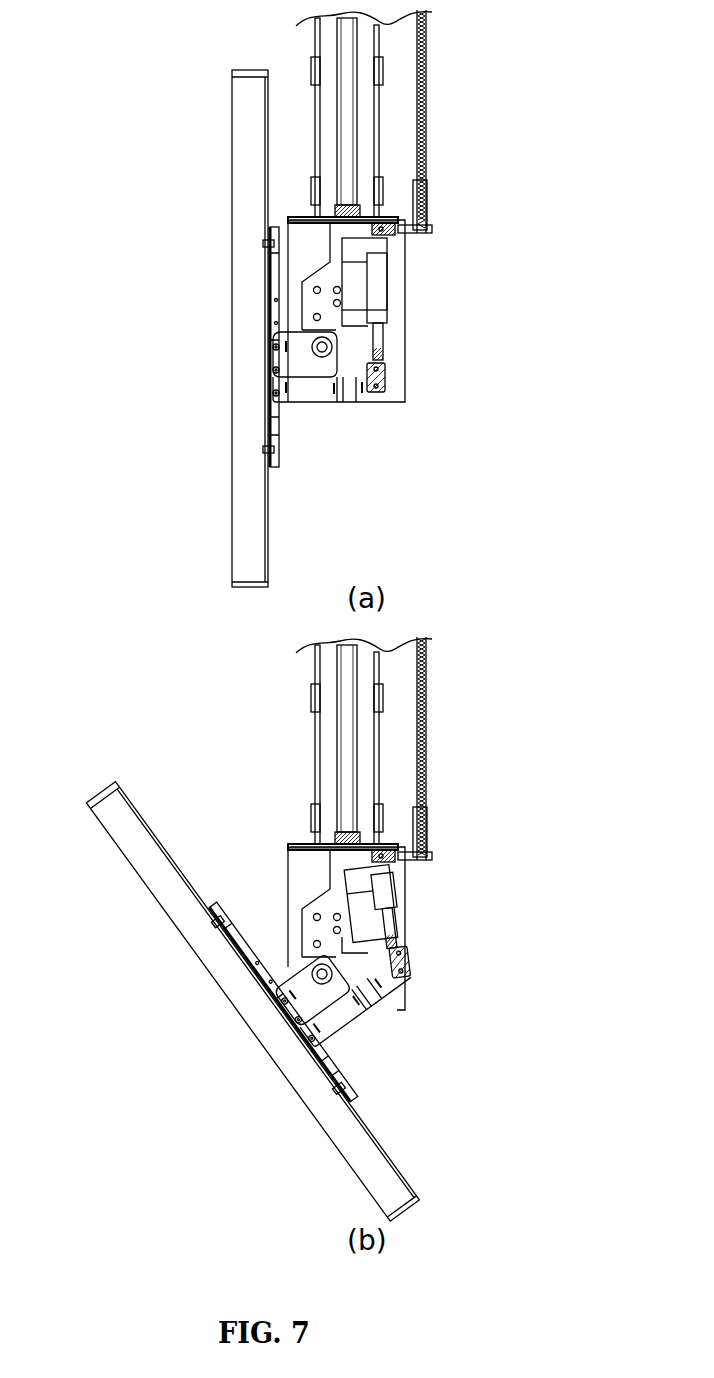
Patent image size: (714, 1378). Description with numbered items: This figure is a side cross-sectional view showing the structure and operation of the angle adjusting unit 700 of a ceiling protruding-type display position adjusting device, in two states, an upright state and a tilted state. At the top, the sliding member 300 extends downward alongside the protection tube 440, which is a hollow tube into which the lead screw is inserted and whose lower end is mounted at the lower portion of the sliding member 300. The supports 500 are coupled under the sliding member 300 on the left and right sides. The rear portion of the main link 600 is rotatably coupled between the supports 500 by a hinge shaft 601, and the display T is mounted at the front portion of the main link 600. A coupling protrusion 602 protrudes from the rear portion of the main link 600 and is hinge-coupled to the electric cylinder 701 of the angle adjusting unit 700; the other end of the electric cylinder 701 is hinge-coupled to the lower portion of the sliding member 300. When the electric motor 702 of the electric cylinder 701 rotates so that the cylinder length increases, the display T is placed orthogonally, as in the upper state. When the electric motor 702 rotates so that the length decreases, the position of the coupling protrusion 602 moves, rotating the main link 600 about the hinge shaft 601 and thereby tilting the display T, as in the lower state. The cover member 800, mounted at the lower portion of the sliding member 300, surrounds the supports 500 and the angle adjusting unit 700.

The display T is at (232, 153).
The sliding member 300 is at (378, 97).
The protection tube 440 is at (357, 148).
The supports 500 is at (325, 258).
The main link 600 is at (292, 393).
The hinge shaft 601 is at (312, 350).
The coupling protrusion 602 is at (377, 393).
The angle adjusting unit 700 is at (451, 594).
The electric cylinder 701 is at (380, 313).
The electric motor 702 is at (358, 283).
The cover member 800 is at (400, 377).